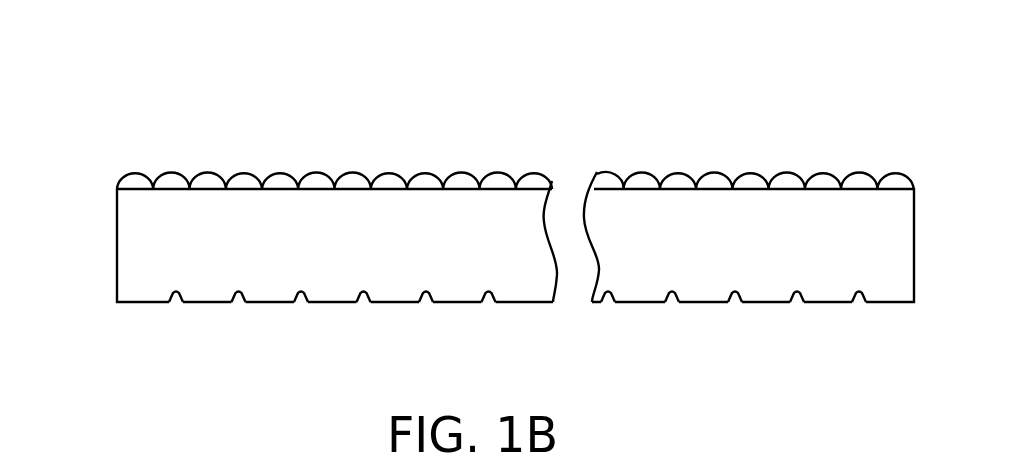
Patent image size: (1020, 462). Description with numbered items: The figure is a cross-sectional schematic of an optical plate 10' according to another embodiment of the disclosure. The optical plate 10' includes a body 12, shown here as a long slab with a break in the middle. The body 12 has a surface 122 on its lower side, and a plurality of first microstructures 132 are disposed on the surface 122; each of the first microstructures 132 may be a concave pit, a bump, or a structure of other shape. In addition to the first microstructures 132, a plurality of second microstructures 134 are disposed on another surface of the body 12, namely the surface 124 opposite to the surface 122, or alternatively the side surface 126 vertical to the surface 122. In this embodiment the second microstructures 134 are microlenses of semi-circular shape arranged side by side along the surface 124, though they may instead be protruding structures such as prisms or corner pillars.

The optical plate 10' is at (473, 194).
The body 12 is at (822, 207).
The surface 124 is at (428, 187).
The second microstructures 134 is at (893, 180).
The side surface 126 is at (116, 247).
The first microstructures 132 is at (427, 306).
The surface 122 is at (705, 304).